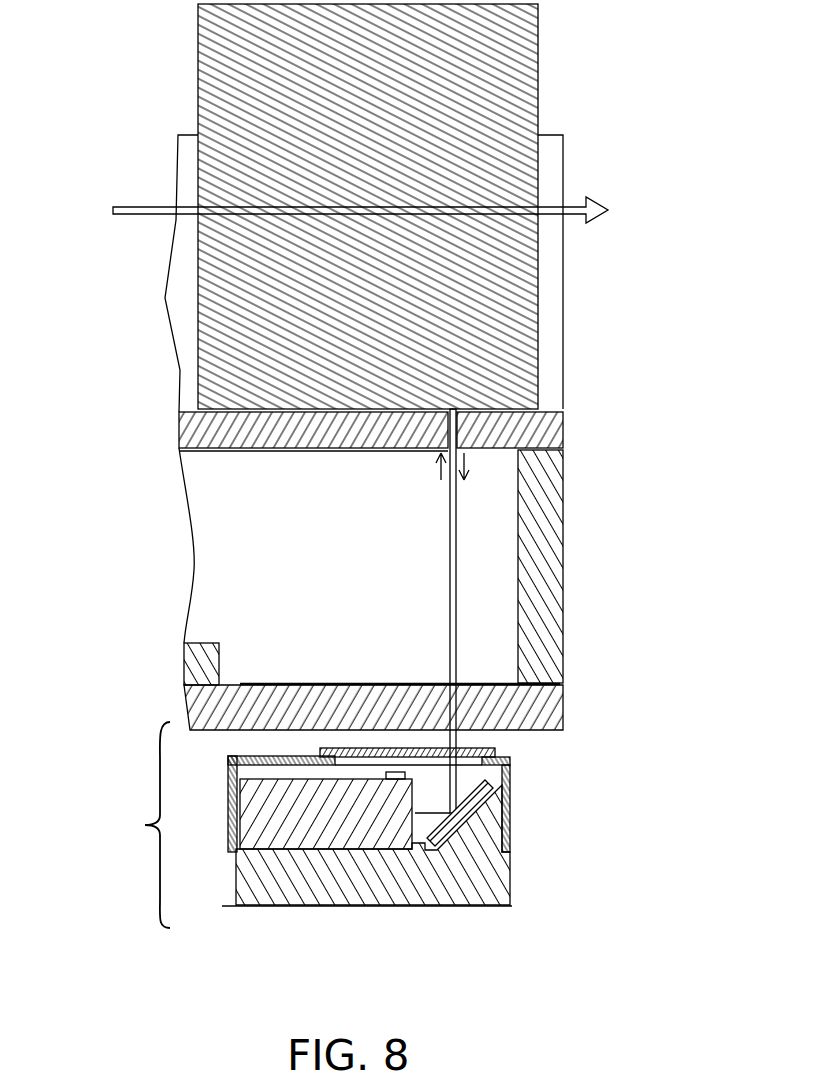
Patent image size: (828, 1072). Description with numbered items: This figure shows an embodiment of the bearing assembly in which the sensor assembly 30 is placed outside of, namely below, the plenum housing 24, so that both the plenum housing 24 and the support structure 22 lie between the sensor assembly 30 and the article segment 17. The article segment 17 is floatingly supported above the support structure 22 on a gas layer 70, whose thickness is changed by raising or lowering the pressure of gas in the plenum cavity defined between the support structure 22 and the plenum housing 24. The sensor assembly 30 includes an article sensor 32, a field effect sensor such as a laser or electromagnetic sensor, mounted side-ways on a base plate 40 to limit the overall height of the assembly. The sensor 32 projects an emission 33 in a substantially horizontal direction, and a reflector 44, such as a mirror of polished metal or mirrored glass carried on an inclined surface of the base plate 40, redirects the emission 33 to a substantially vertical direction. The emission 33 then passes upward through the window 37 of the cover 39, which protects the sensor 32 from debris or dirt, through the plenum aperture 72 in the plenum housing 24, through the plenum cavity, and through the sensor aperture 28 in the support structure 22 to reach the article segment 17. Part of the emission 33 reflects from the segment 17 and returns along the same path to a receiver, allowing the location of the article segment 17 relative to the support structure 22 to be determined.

The article segment 17 is at (505, 86).
The support structure 22 is at (184, 268).
The plenum housing 24 is at (214, 491).
The sensor aperture 28 is at (458, 433).
The sensor assembly 30 is at (141, 825).
The article sensor 32 is at (260, 818).
The emission 33 is at (456, 487).
The window 37 is at (468, 745).
The cover 39 is at (230, 762).
The base plate 40 is at (402, 890).
The reflector 44 is at (460, 812).
The gas layer 70 is at (540, 409).
The plenum aperture 72 is at (456, 703).